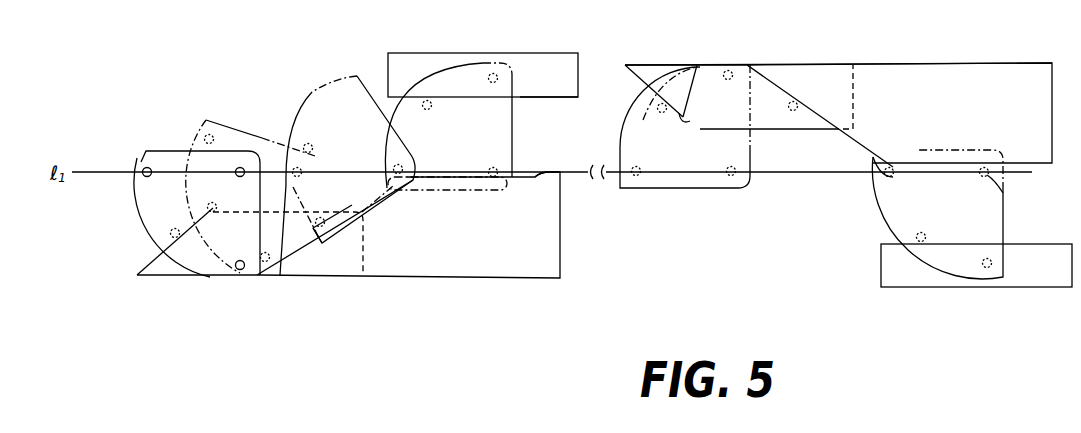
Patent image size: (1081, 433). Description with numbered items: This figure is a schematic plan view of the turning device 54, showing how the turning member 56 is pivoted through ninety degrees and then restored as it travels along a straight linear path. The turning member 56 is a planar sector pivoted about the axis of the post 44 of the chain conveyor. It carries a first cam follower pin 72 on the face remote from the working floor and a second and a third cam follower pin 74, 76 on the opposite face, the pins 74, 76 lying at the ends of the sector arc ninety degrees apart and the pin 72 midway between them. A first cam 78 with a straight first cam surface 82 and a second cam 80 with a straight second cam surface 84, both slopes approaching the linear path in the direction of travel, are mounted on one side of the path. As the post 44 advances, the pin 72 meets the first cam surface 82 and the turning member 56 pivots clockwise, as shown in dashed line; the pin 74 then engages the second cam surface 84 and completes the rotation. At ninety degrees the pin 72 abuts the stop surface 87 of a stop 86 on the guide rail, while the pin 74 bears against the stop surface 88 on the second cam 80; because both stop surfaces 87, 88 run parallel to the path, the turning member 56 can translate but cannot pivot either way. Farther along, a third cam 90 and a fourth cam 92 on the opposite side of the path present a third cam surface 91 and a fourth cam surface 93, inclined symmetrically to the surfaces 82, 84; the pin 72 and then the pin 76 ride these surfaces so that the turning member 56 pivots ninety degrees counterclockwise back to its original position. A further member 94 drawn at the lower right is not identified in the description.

The hinge assembly 54 is at (216, 70).
The turning member 56 is at (166, 150).
The post 44 is at (243, 167).
The third cam follower pin 76 is at (143, 170).
The first cam follower pin 72 is at (170, 232).
The second cam follower pin 74 is at (237, 271).
The first cam surface 82 is at (147, 268).
The first cam 78 is at (143, 280).
The second cam surface 84 is at (362, 198).
The second cam 80 is at (543, 266).
The stop 86 is at (554, 58).
The stop surface 87 is at (546, 98).
The stop surface 88 is at (562, 177).
The third cam 90 is at (652, 68).
The third cam surface 91 is at (697, 65).
The fourth cam surface 93 is at (793, 100).
The fourth cam 92 is at (967, 63).
The panel 94 is at (976, 265).